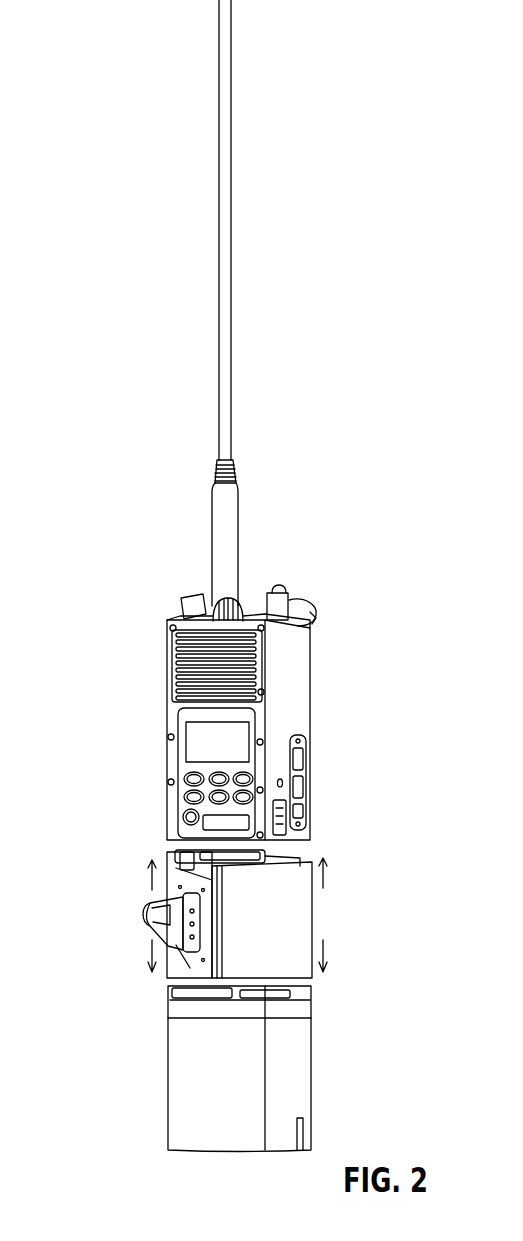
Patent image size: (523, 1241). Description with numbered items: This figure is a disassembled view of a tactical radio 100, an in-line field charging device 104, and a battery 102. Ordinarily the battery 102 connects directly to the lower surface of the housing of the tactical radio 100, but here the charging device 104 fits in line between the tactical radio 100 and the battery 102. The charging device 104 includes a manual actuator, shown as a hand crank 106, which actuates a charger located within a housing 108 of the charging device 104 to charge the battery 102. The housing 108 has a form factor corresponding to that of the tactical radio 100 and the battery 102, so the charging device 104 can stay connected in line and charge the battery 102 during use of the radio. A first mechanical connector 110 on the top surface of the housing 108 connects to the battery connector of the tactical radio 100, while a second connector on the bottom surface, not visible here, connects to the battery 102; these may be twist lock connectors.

The tactical radio 100 is at (167, 661).
The battery 102 is at (178, 1070).
The charging device 104 is at (190, 970).
The hand crank 106 is at (151, 924).
The housing 108 is at (302, 922).
The first mechanical connector 110 is at (300, 858).